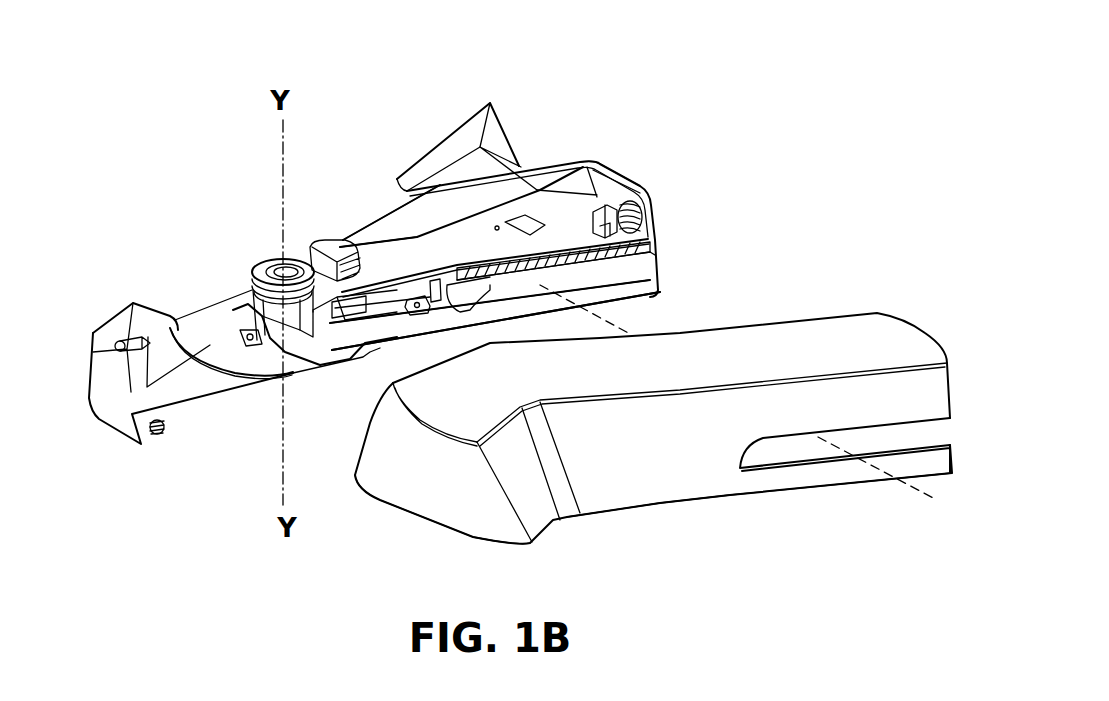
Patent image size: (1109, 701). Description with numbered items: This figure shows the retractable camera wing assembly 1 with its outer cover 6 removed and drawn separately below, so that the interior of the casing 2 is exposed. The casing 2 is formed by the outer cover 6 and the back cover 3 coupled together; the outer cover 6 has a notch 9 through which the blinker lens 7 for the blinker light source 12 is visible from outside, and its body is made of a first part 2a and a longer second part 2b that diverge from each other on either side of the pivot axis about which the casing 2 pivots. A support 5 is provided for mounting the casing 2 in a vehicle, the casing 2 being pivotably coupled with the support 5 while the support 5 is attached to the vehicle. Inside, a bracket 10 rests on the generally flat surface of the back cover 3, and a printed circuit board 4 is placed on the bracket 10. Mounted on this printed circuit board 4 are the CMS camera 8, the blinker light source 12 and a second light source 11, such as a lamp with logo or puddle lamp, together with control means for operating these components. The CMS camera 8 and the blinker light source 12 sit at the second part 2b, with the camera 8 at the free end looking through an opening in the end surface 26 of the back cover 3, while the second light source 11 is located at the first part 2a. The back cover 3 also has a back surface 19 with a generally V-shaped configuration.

The retractable camera wing assembly 1 is at (234, 172).
The casing 2 is at (912, 298).
The first part 2a is at (477, 403).
The second part 2b is at (817, 342).
The back cover 3 is at (440, 163).
The printed circuit board 4 is at (380, 247).
The support 5 is at (113, 410).
The outer cover 6 is at (693, 477).
The blinker lens 7 is at (647, 270).
The CMS camera 8 is at (650, 195).
The notch 9 is at (933, 438).
The bracket 10 is at (370, 293).
The second light source 11 is at (277, 343).
The blinker light source 12 is at (657, 227).
The back surface 19 is at (490, 137).
The end surface 26 is at (607, 170).